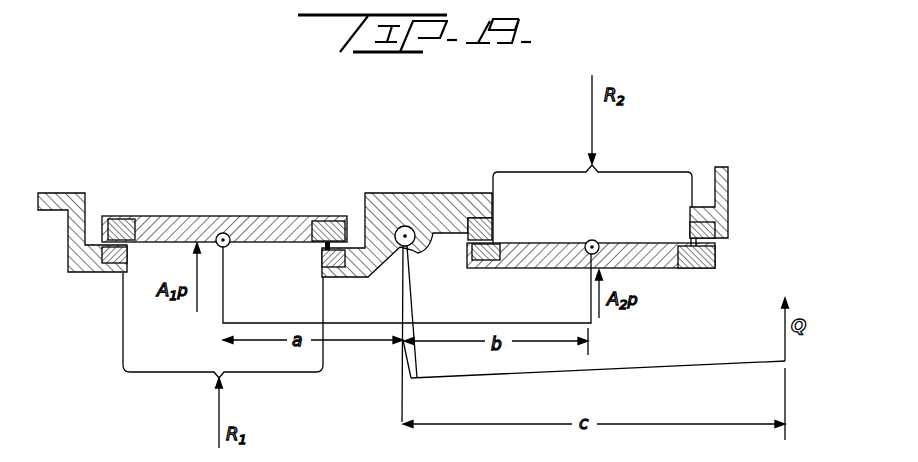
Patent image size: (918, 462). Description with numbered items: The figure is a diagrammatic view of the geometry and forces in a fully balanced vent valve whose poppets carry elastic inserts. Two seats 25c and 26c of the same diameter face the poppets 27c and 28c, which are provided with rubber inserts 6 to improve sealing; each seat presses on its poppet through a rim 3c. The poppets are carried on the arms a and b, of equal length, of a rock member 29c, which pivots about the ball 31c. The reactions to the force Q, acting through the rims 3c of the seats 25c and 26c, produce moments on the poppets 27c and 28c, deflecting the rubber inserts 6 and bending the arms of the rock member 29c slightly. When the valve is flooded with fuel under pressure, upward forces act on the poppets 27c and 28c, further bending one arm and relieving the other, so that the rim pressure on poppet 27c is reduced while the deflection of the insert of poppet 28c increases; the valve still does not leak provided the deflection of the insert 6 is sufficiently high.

The seat 25c is at (100, 272).
The poppet 27c is at (197, 215).
The rock member 29c is at (410, 290).
The pivot ball 31c is at (455, 178).
The poppet 28c is at (623, 245).
The seat 26c is at (792, 250).
The rubber insert 6 is at (127, 217).
The rim 3c is at (126, 243).